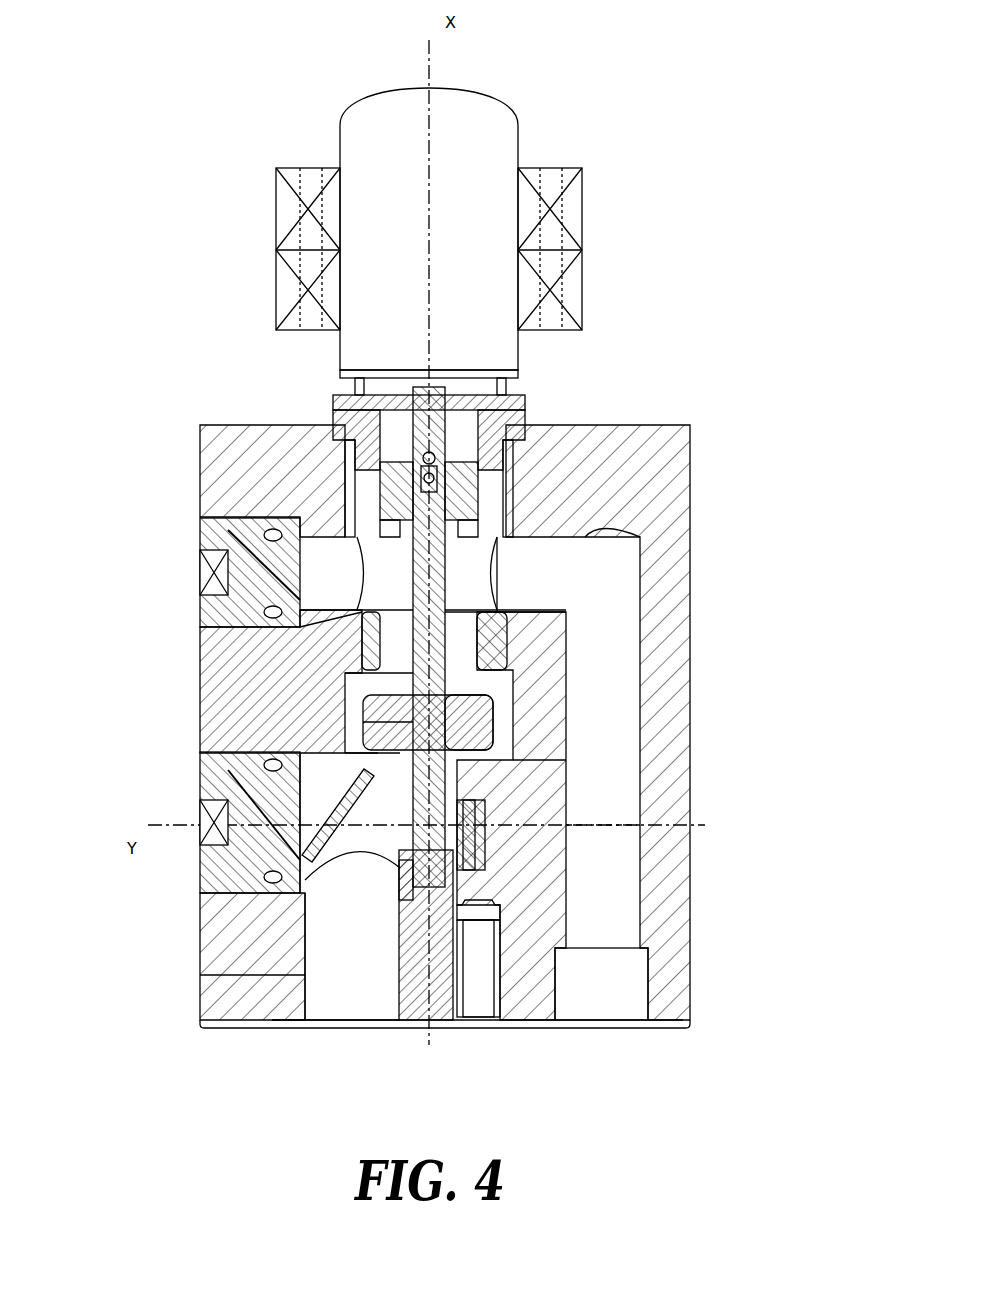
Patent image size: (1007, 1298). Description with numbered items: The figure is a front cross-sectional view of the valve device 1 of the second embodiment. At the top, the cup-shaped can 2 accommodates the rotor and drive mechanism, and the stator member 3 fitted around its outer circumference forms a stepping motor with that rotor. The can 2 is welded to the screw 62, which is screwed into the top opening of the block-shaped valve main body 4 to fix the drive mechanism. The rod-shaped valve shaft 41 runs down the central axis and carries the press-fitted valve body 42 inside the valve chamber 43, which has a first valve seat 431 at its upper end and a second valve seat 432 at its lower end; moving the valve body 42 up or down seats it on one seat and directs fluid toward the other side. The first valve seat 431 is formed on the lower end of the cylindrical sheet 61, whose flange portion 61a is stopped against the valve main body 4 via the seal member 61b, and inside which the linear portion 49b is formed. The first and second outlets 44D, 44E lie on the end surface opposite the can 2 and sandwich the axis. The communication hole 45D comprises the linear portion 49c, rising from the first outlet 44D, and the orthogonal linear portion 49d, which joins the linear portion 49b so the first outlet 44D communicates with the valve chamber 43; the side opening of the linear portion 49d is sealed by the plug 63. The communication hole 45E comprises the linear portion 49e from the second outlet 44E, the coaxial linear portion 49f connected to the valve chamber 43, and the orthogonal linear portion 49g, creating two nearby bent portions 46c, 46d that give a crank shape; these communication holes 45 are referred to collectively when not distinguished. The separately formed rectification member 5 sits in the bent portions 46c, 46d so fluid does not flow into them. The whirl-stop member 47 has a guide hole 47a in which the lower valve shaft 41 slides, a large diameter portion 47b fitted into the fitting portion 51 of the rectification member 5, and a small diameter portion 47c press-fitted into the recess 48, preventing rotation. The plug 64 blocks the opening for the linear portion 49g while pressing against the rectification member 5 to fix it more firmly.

The valve device 1 is at (610, 92).
The can 2 is at (512, 120).
The stator member 3 is at (583, 195).
The valve main body 4 is at (443, 727).
The rectification member 5 is at (224, 822).
The valve shaft 41 is at (412, 565).
The valve body 42 is at (368, 738).
The valve chamber 43 is at (365, 692).
The first valve seat 431 is at (500, 683).
The second valve seat 432 is at (483, 748).
The first outlet 44D is at (588, 1030).
The second outlet 44E is at (358, 1030).
The communication holes 45 is at (446, 816).
The communication hole 45D is at (640, 695).
The communication hole 45E is at (300, 947).
The bent portion 46c is at (296, 795).
The bent portion 46d is at (500, 850).
The whirl-stop member 47 is at (377, 894).
The guide hole 47a is at (352, 815).
The large diameter portion 47b is at (403, 852).
The small diameter portion 47c is at (400, 893).
The recess 48 is at (400, 922).
The linear portion 49b is at (497, 660).
The linear portion 49c is at (585, 835).
The linear portion 49d is at (585, 532).
The linear portion 49e is at (300, 972).
The linear portion 49f is at (520, 760).
The linear portion 49g is at (385, 778).
The fitting portion 51 is at (515, 862).
The cylindrical sheet 61 is at (365, 655).
The flange portion 61a is at (355, 625).
The seal member 61b is at (497, 632).
The screw 62 is at (335, 420).
The plug 63 is at (200, 548).
The plug 64 is at (200, 870).